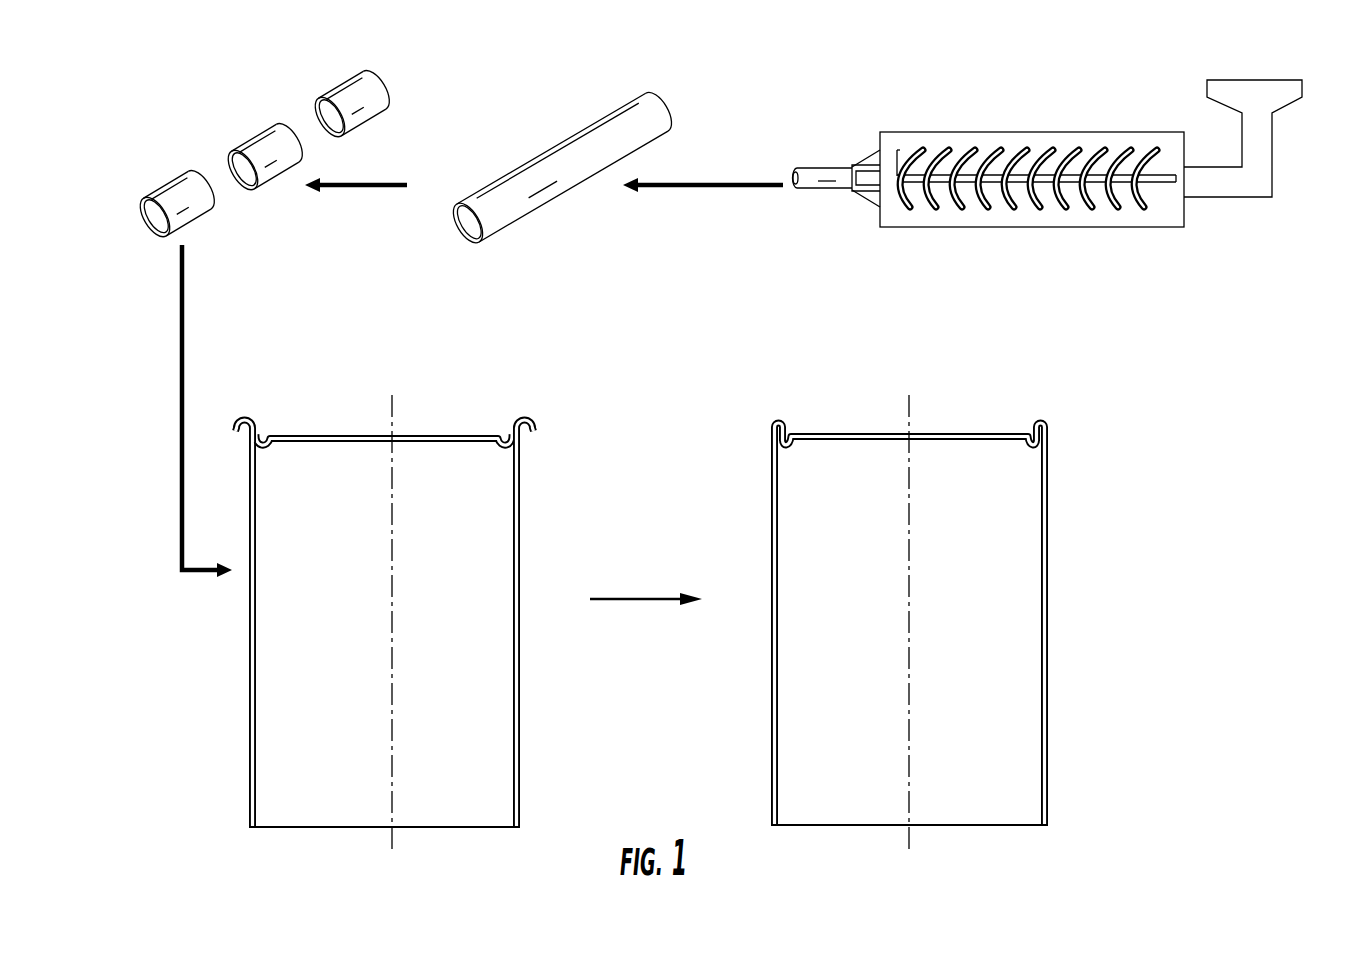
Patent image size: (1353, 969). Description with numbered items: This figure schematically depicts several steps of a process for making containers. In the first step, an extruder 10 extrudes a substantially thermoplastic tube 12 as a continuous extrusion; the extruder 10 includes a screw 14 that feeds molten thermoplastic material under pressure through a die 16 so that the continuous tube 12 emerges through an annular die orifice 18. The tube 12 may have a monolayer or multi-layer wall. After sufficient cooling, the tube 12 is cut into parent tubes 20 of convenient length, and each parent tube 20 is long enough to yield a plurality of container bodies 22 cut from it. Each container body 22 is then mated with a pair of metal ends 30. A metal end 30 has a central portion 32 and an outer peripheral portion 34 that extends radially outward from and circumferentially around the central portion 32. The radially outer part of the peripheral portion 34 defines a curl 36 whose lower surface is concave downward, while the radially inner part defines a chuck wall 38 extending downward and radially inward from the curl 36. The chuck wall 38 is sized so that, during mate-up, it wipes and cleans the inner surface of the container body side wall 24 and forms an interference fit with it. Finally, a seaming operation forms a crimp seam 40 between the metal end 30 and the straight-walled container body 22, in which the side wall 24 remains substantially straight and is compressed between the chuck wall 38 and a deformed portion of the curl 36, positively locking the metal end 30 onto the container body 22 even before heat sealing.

The extruder 10 is at (1030, 132).
The tube 12 is at (817, 188).
The screw 14 is at (1100, 187).
The die 16 is at (858, 152).
The annular die orifice 18 is at (855, 168).
The parent tube 20 is at (640, 133).
The container body 22 is at (317, 110).
The side wall 24 is at (517, 580).
The metal end 30 is at (371, 458).
The central portion 32 is at (422, 428).
The outer peripheral portion 34 is at (521, 410).
The curl 36 is at (243, 419).
The chuck wall 38 is at (268, 430).
The crimp seam 40 is at (755, 427).